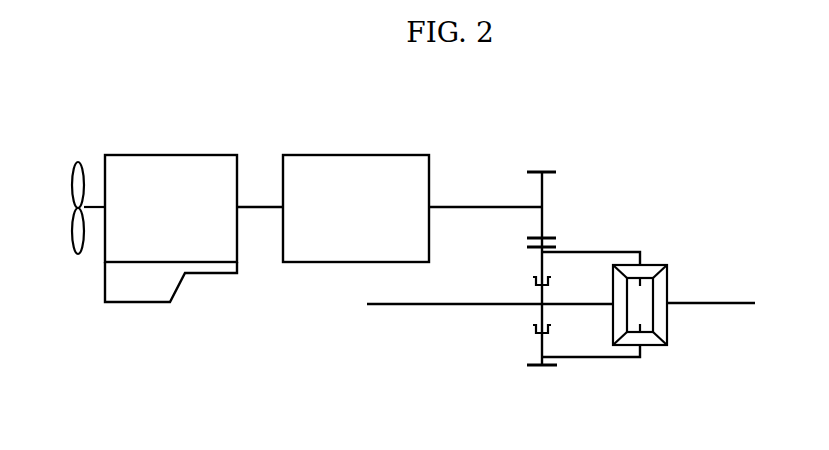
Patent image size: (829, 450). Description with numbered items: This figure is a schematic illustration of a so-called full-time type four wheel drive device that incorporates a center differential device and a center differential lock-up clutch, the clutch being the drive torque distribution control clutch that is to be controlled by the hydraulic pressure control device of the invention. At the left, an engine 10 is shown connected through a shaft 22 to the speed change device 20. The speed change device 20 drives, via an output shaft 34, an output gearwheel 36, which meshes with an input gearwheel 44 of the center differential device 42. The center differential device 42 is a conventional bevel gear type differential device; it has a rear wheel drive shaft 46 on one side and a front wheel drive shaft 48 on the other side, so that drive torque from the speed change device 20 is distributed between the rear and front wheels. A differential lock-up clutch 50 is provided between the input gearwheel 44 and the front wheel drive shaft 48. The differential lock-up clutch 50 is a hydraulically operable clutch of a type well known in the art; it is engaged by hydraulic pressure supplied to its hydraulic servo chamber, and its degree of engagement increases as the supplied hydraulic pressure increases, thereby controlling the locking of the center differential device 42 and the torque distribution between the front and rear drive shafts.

The engine 10 is at (168, 163).
The speed change device 20 is at (360, 163).
The engine output shaft 22 is at (259, 212).
The output shaft 34 is at (469, 205).
The output gearwheel 36 is at (543, 186).
The center differential device 42 is at (603, 326).
The input gearwheel 44 is at (540, 343).
The rear wheel drive shaft 46 is at (729, 308).
The front wheel drive shaft 48 is at (389, 310).
The differential lock-up clutch 50 is at (532, 284).